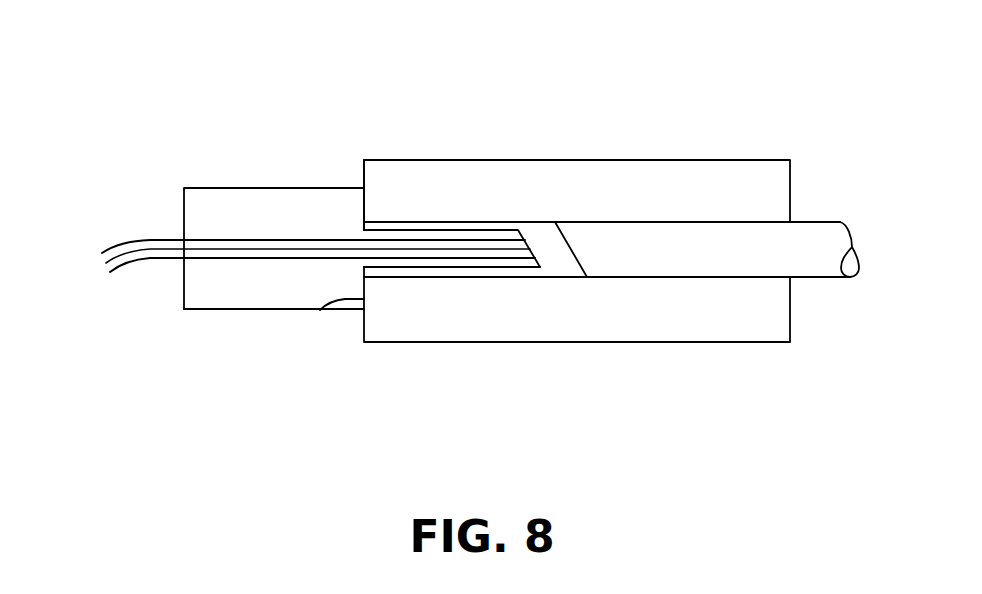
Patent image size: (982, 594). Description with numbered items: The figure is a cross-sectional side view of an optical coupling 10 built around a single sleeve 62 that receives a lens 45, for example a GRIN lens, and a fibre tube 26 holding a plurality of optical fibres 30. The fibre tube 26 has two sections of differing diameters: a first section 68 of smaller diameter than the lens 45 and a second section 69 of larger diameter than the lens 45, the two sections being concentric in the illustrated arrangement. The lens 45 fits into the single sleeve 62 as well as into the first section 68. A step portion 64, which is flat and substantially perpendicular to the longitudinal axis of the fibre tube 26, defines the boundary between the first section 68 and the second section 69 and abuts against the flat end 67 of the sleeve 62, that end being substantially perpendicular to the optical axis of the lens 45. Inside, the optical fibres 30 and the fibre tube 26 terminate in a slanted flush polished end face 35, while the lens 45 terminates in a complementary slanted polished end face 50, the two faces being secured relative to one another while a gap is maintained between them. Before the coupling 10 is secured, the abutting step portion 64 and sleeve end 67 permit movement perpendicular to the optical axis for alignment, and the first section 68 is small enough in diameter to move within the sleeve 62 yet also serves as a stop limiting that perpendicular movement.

The optical coupling 10 is at (679, 64).
The fibre tube 26 is at (284, 217).
The optical fibre 30 is at (148, 256).
The end face 35 is at (538, 243).
The lens 45 is at (818, 268).
The slanted end face 50 is at (575, 253).
The single sleeve 62 is at (732, 177).
The step portion 64 is at (323, 307).
The flat end 67 is at (363, 172).
The first section 68 is at (428, 268).
The second section 69 is at (247, 310).